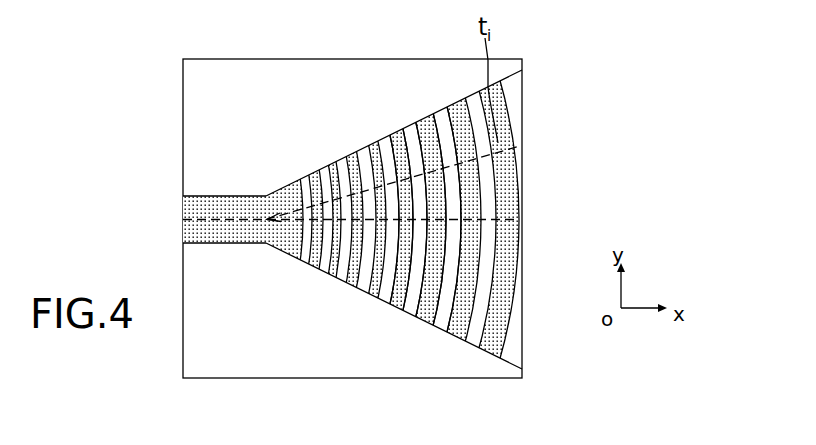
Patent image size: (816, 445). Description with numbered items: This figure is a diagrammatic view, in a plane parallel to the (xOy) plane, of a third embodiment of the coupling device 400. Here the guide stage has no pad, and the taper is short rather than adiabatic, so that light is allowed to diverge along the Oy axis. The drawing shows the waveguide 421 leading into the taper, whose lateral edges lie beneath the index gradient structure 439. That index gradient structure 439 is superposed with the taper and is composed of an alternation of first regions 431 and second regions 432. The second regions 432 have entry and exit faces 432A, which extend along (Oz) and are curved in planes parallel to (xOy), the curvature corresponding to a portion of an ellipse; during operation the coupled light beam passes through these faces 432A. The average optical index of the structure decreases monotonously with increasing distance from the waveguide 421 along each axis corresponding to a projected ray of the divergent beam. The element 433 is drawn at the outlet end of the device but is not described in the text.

The coupling device 400 is at (580, 90).
The waveguide 421 is at (221, 203).
The index gradient structure 439 is at (398, 103).
The faces 432A is at (353, 168).
The second regions 432 is at (357, 270).
The first regions 431 is at (453, 320).
The end face 433 is at (508, 219).